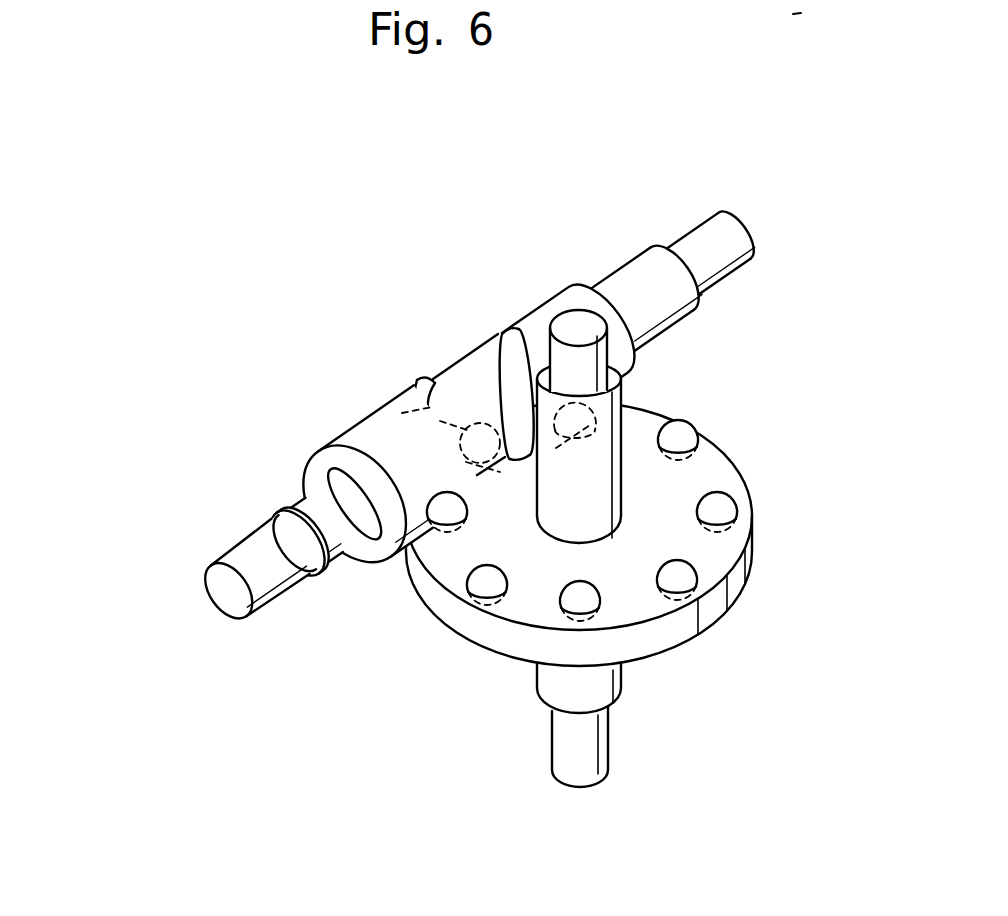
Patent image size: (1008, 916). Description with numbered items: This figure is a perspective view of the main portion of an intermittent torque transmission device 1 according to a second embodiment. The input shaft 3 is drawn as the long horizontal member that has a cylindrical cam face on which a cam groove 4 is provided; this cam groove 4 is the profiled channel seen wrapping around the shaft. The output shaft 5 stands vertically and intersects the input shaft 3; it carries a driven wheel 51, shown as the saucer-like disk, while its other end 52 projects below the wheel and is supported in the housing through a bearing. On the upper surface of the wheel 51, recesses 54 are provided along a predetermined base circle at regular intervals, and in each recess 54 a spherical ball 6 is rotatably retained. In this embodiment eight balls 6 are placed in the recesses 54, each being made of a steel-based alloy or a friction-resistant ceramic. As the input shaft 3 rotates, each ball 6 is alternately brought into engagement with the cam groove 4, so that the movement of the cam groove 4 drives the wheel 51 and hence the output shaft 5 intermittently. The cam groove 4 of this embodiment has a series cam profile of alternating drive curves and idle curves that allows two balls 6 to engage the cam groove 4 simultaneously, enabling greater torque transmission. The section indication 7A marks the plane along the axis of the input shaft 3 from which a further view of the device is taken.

The intermittent torque transmission device 1 is at (764, 272).
The input shaft 3 is at (363, 418).
The cam groove 4 is at (497, 336).
The output shaft 5 is at (628, 574).
The driven wheel 51 is at (716, 477).
The other end of the output shaft 52 is at (568, 742).
The recess 54 is at (683, 598).
The spherical ball 6 is at (591, 530).
The section line 7A is at (223, 592).